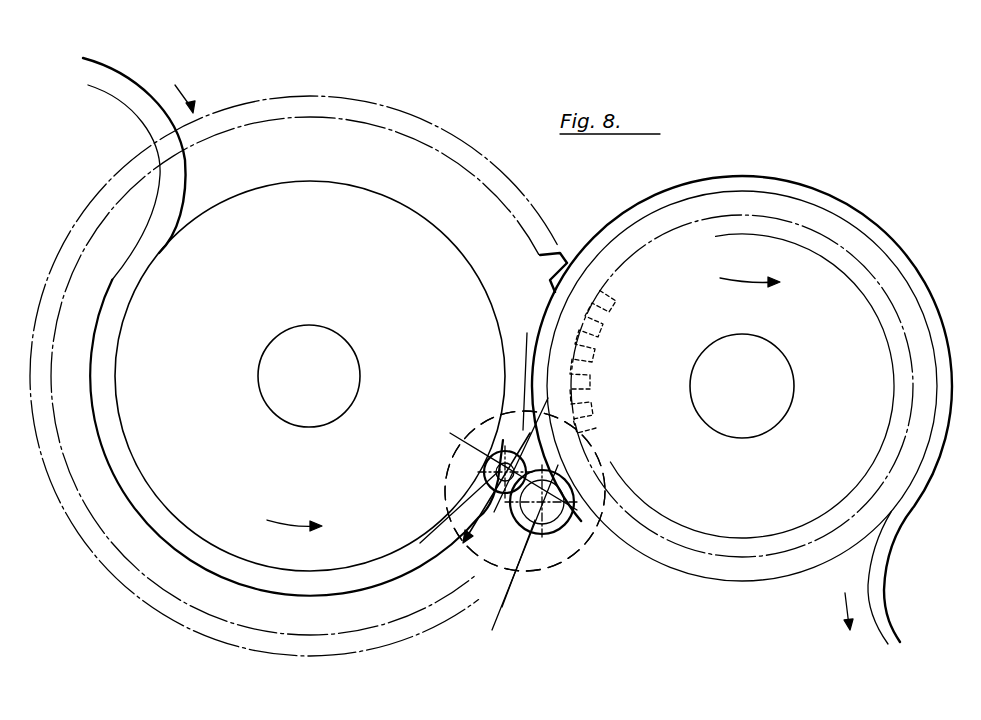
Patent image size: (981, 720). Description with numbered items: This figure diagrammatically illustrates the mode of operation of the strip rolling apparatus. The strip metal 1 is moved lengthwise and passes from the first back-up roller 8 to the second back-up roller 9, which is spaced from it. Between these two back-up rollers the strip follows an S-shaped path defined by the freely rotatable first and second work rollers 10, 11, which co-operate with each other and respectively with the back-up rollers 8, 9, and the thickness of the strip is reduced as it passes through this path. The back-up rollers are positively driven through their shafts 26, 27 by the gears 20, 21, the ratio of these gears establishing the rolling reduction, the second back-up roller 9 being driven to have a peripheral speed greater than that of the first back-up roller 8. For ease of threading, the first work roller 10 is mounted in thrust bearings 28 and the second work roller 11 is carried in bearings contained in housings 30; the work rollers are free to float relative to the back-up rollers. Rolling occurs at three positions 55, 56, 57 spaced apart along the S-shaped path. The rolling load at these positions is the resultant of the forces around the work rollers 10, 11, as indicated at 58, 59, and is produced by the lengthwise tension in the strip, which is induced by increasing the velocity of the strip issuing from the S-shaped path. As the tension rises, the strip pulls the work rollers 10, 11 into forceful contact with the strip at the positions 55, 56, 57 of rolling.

The strip metal 1 is at (144, 117).
The first back-up roller 8 is at (197, 510).
The second back-up roller 9 is at (826, 548).
The first work roller 10 is at (497, 471).
The second work roller 11 is at (546, 515).
The gear 20 is at (60, 512).
The gear 21 is at (683, 532).
The shaft 26 is at (321, 331).
The shaft 27 is at (744, 345).
The thrust bearings 28 is at (463, 421).
The housing 30 is at (525, 471).
The position of rolling 55 is at (497, 477).
The position of rolling 56 is at (505, 475).
The position of rolling 57 is at (572, 507).
The forces around the work rollers 58 is at (537, 341).
The forces around the work rollers 59 is at (507, 604).